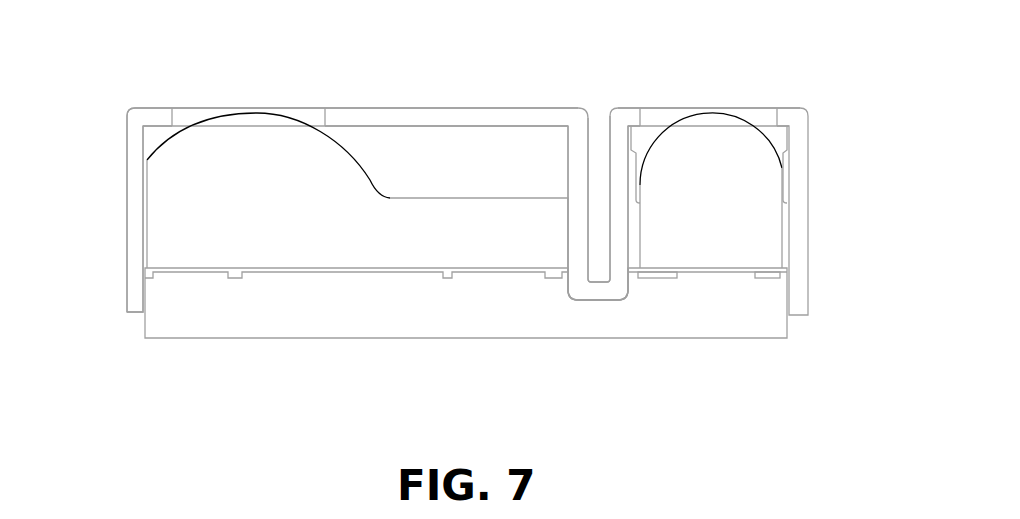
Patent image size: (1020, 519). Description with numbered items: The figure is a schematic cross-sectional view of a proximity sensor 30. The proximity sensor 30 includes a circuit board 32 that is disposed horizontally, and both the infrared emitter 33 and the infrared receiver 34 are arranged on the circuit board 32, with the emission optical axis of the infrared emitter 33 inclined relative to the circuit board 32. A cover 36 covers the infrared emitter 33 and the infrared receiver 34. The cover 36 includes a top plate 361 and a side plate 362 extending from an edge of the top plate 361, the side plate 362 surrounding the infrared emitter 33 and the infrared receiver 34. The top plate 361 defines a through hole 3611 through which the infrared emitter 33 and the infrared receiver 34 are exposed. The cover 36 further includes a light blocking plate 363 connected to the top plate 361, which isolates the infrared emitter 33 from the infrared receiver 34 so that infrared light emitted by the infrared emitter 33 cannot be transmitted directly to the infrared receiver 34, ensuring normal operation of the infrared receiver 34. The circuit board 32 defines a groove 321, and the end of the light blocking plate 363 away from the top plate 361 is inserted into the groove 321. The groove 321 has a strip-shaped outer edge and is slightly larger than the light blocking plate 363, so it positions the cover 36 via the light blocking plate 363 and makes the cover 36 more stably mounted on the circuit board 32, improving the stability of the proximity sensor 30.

The proximity sensor 30 is at (133, 49).
The circuit board 32 is at (400, 322).
The groove 321 is at (625, 301).
The infrared emitter 33 is at (735, 185).
The infrared receiver 34 is at (343, 187).
The cover 36 is at (808, 130).
The top plate 361 is at (470, 120).
The through hole 3611 is at (262, 106).
The side plate 362 is at (137, 190).
The light blocking plate 363 is at (580, 165).